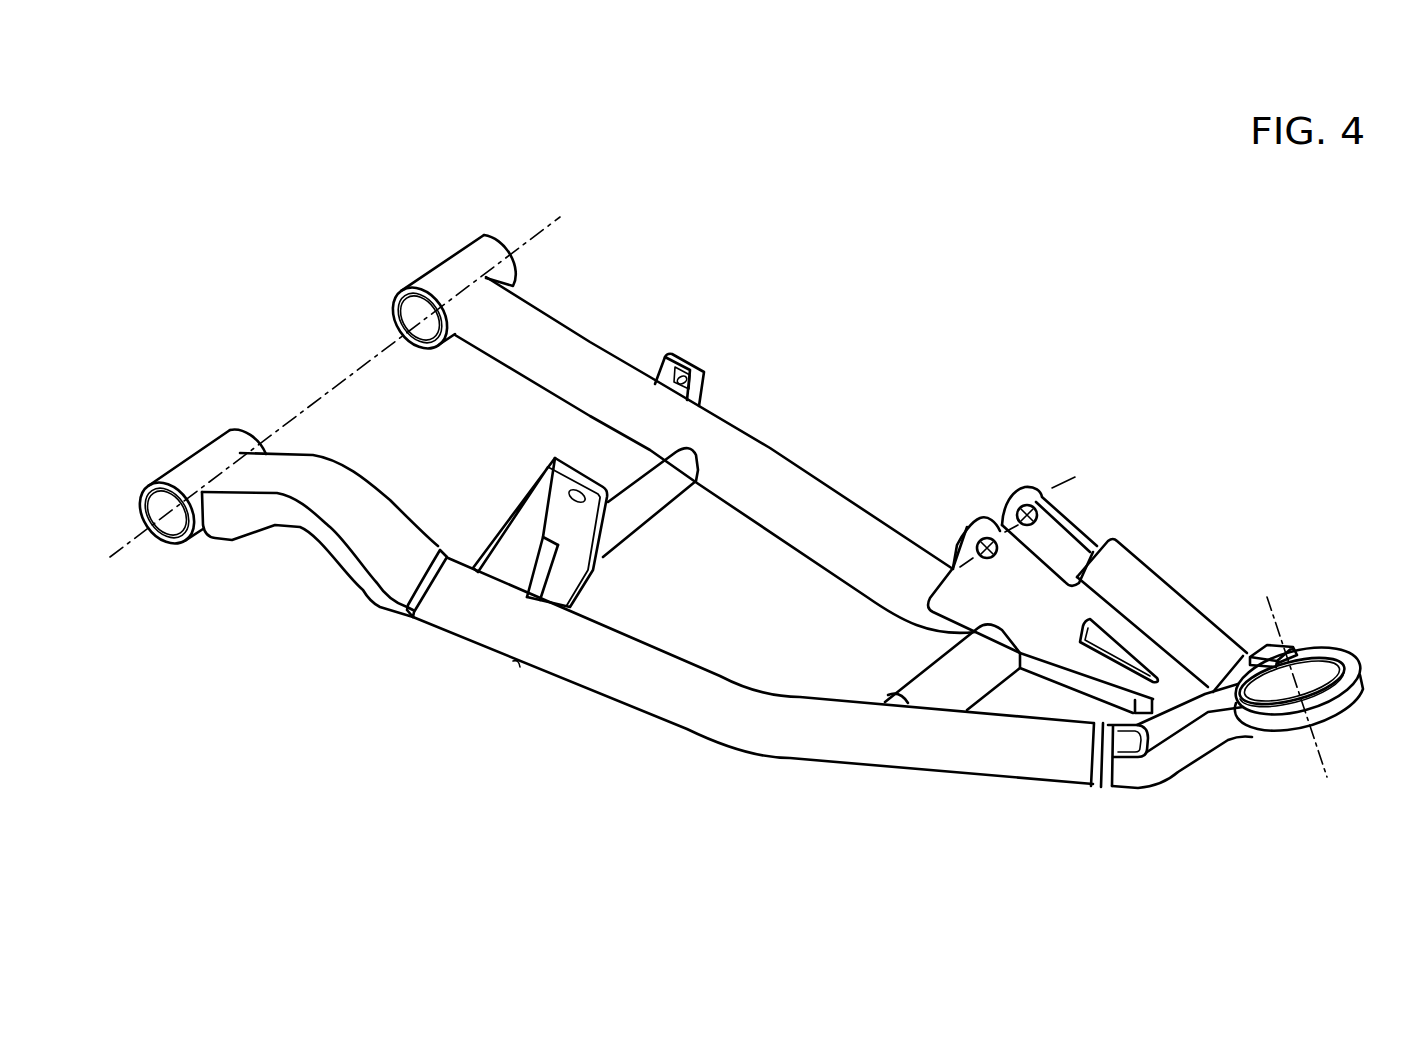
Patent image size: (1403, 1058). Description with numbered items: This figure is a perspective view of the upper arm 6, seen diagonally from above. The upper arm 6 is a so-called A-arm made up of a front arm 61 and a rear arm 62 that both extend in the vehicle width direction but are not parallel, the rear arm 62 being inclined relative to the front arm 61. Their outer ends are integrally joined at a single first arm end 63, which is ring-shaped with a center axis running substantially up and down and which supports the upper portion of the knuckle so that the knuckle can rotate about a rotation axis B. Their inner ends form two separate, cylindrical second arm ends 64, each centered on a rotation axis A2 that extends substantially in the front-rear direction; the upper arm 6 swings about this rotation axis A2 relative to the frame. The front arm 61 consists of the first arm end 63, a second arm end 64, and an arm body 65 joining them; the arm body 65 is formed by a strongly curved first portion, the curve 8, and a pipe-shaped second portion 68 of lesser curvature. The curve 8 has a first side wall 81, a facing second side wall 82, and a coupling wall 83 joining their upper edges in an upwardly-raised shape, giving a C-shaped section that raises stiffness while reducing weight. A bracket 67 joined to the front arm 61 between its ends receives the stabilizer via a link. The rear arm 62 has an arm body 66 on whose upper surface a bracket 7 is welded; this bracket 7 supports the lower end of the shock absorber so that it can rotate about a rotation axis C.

The upper arm 6 is at (862, 413).
The front arm 61 is at (654, 715).
The rear arm 62 is at (775, 450).
The first arm end 63 is at (1347, 657).
The second arm end 64 is at (450, 268).
The arm body 65 is at (468, 727).
The arm body 66 is at (863, 547).
The bracket 67 is at (582, 582).
The second portion 68 is at (470, 628).
The bracket 7 is at (1128, 567).
The curve 8 is at (377, 603).
The first side wall 81 is at (257, 513).
The second side wall 82 is at (315, 470).
The coupling wall 83 is at (390, 525).
The rotation axis A2 is at (325, 388).
The rotation axis B is at (1283, 617).
The rotation axis C is at (1063, 480).